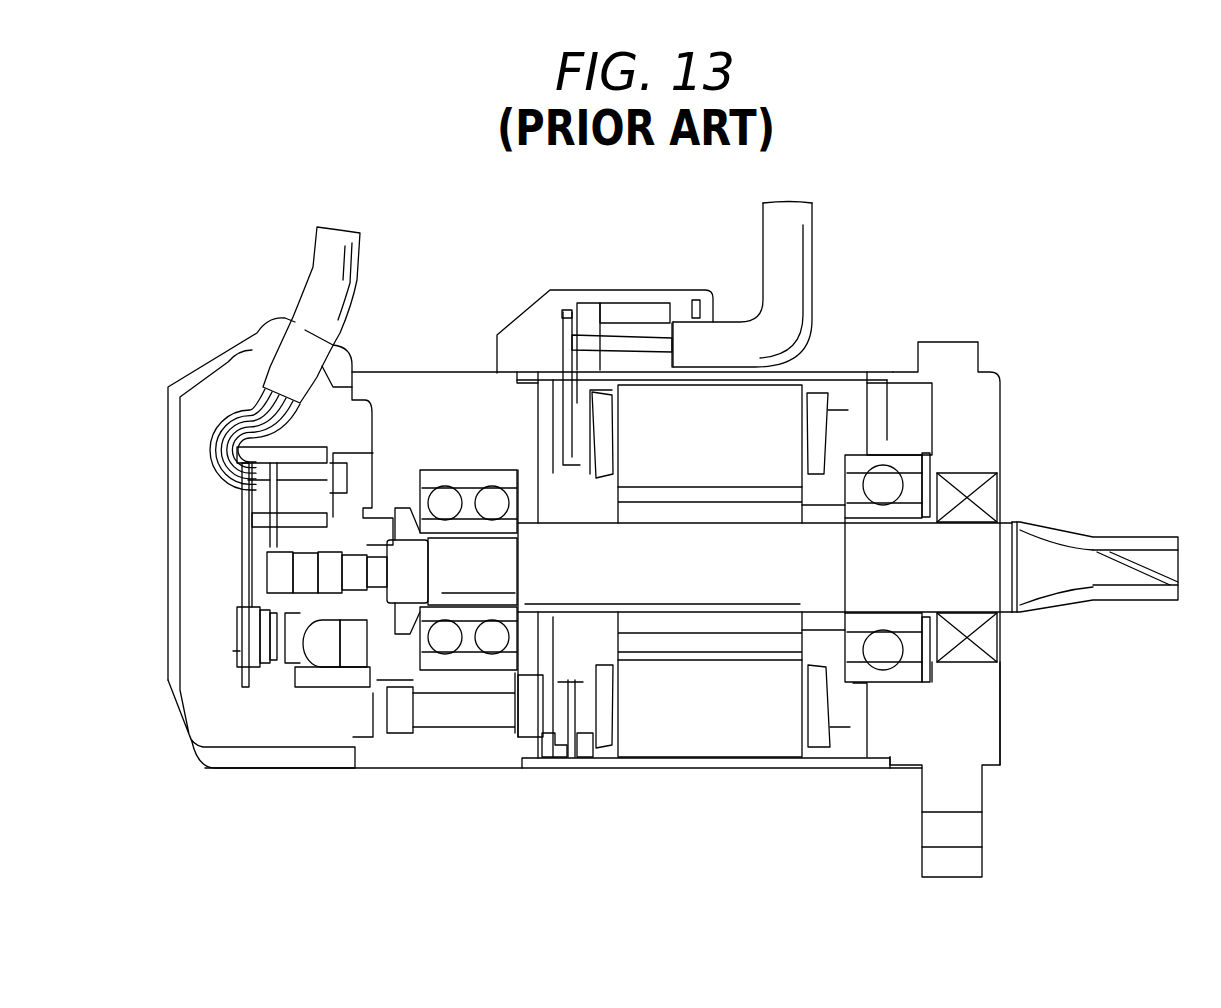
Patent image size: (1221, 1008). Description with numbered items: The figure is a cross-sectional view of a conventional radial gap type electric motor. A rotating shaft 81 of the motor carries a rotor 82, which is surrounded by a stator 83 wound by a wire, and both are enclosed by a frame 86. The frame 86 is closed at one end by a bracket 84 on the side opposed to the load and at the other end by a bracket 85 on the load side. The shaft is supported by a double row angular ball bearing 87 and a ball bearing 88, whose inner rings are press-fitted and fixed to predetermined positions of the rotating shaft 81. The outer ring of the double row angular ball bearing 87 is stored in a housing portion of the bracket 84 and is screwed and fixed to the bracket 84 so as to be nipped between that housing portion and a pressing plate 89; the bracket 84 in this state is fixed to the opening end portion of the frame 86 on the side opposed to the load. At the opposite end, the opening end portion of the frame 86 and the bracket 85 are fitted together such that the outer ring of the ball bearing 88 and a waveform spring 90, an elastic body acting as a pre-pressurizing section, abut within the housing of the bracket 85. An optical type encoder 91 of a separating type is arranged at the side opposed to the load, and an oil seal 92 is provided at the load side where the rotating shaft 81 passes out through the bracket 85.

The rotating shaft 81 is at (1038, 555).
The rotor 82 is at (747, 487).
The stator 83 is at (702, 430).
The bracket of the side opposed to load 84 is at (440, 748).
The bracket of the load side 85 is at (955, 400).
The frame 86 is at (702, 767).
The double row angular ball bearing 87 is at (470, 662).
The ball bearing 88 is at (913, 463).
The pressing plate 89 is at (530, 677).
The waveform spring 90 is at (932, 672).
The optical type encoder 91 is at (267, 662).
The oil seal 92 is at (1000, 643).